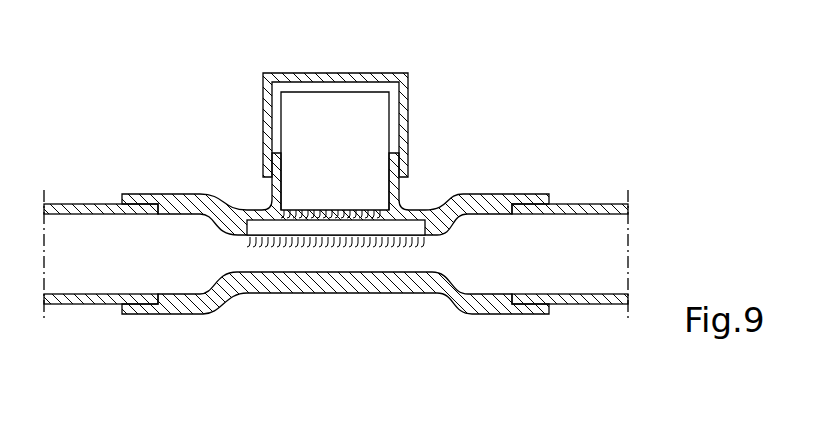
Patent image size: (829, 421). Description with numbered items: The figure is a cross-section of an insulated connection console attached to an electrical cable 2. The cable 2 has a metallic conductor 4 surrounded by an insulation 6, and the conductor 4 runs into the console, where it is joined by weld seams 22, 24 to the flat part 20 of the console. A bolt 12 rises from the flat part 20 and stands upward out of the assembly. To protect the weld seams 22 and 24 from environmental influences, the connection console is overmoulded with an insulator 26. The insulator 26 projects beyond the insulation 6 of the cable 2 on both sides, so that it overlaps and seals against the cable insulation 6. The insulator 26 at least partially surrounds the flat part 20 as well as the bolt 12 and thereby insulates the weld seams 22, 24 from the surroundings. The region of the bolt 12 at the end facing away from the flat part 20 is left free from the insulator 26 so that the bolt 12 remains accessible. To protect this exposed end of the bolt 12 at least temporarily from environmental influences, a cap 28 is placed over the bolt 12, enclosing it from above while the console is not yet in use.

The electrical cable 2 is at (336, 194).
The metallic conductor 4 is at (553, 240).
The insulation 6 is at (607, 207).
The bolt 12 is at (370, 127).
The flat part 20 is at (300, 230).
The weld seam 22 is at (394, 193).
The weld seam 24 is at (360, 243).
The insulator 26 is at (477, 307).
The cap 28 is at (365, 77).